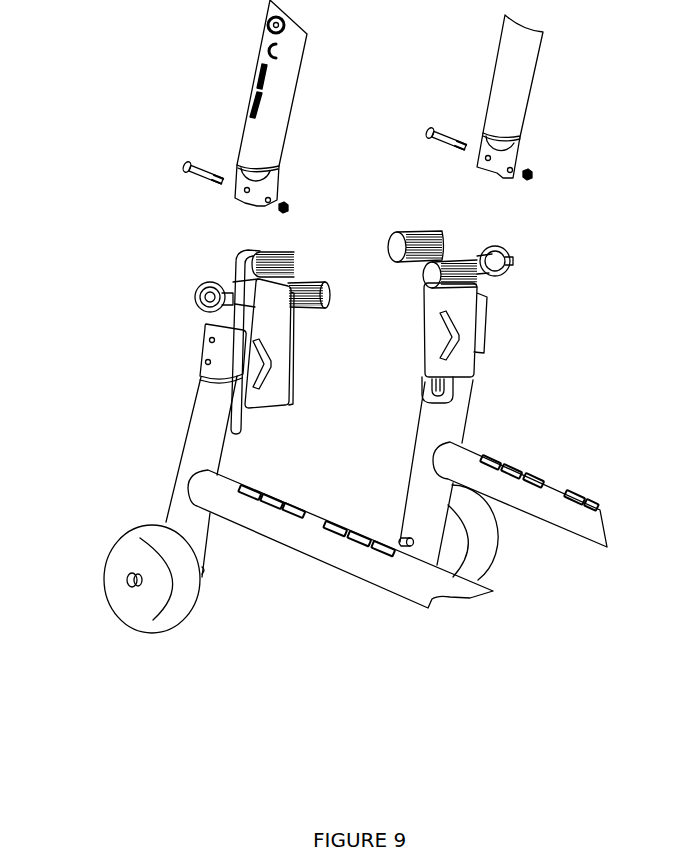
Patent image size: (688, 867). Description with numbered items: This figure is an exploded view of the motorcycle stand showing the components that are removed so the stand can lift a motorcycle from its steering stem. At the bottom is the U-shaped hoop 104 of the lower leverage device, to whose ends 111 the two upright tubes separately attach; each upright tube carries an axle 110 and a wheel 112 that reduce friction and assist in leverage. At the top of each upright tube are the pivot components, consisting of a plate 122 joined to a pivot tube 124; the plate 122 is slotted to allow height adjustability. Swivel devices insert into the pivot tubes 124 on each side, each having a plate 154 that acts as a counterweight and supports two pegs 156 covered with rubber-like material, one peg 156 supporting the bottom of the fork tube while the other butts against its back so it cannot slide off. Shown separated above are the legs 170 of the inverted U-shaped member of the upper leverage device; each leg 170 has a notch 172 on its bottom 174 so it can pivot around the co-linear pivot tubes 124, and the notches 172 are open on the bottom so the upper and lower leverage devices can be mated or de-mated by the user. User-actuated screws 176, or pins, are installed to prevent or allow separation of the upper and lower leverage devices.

The U-shaped hoop 104 is at (410, 523).
The axle 110 is at (127, 578).
The ends of the hoop 111 is at (193, 482).
The wheel 112 is at (112, 615).
The plate 122 is at (235, 422).
The pivot tube 124 is at (233, 284).
The plate 154 is at (430, 320).
The pegs 156 is at (313, 276).
The legs 170 is at (290, 90).
The notches 172 is at (243, 163).
The bottom of the legs 174 is at (278, 173).
The user-actuated screws 176 is at (193, 175).